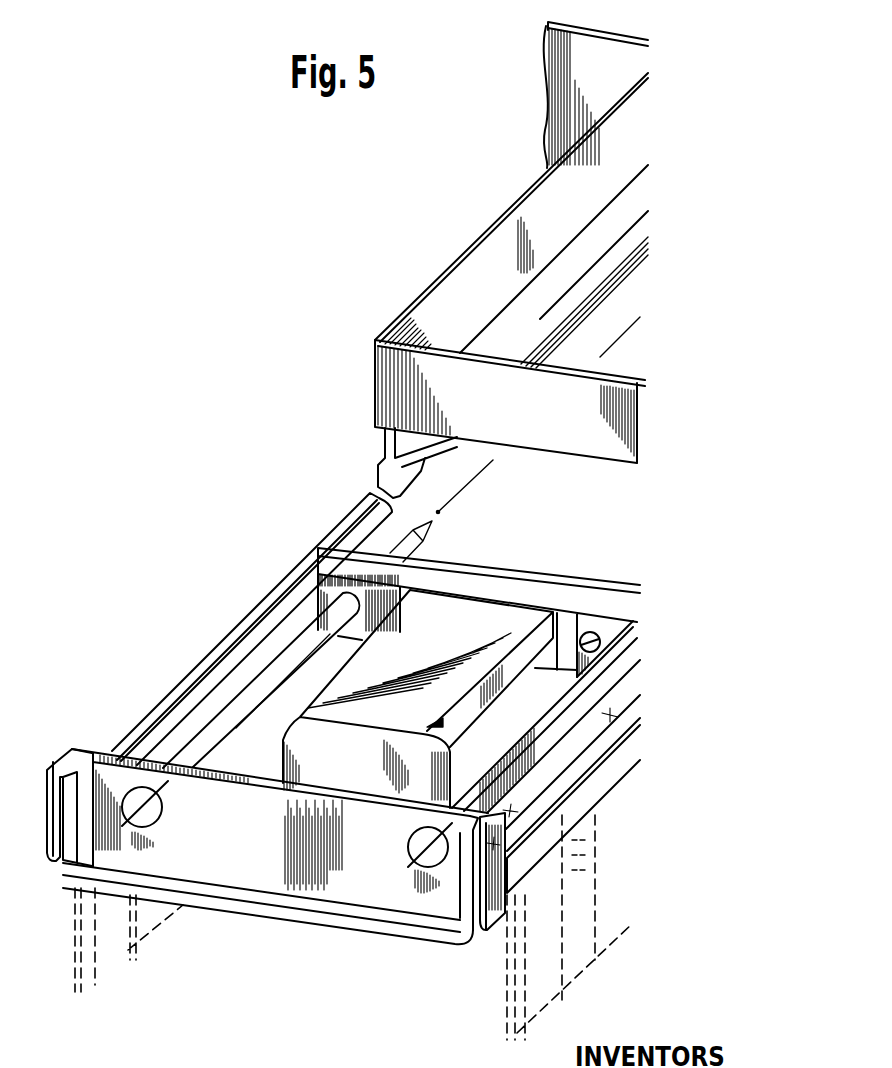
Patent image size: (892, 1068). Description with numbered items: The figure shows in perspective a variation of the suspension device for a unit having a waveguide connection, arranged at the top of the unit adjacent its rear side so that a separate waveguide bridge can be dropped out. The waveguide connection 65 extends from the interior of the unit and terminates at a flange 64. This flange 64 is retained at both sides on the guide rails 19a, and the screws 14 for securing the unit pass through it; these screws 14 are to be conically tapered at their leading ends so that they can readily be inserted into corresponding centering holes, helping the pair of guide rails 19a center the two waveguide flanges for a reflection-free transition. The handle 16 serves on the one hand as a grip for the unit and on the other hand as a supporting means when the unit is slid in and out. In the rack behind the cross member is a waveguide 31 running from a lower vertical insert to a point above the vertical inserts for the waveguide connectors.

The screws 14 is at (280, 670).
The handle 16 is at (333, 913).
The guide rails 19a is at (300, 572).
The waveguide 31 is at (532, 592).
The flange 64 is at (585, 582).
The waveguide connection 65 is at (440, 611).